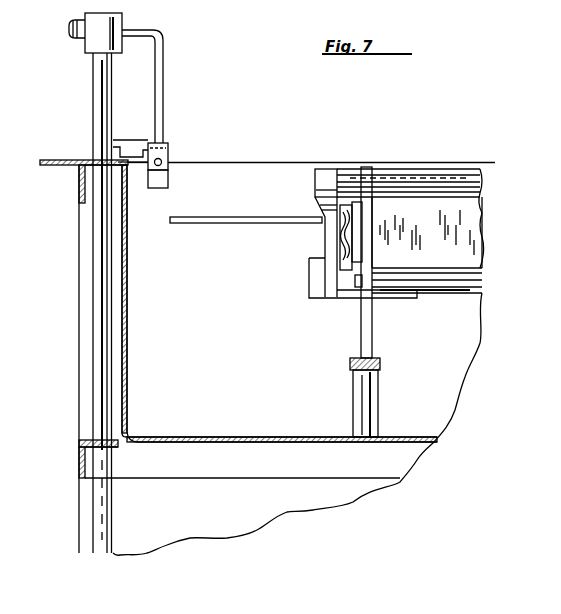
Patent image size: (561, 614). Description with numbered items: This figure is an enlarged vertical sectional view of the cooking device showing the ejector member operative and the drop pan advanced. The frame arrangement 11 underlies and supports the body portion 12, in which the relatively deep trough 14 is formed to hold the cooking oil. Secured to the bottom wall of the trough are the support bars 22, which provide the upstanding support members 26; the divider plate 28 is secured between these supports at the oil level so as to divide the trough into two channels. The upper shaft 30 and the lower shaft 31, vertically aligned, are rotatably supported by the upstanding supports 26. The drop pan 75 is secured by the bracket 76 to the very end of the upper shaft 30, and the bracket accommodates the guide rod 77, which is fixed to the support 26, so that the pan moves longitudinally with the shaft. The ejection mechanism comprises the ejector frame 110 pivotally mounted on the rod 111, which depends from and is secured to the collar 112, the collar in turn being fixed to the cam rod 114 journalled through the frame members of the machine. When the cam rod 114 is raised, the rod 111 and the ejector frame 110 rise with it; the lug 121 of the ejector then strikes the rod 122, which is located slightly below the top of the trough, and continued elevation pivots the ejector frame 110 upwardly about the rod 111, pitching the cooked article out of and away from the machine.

The frame arrangement 11 is at (80, 467).
The body portion 12 is at (122, 368).
The trough 14 is at (187, 443).
The support bars 22 is at (383, 368).
The upstanding support members 26 is at (372, 170).
The divider plate 28 is at (435, 227).
The upper shaft 30 is at (430, 183).
The lower shaft 31 is at (470, 295).
The drop pan 75 is at (313, 280).
The bracket 76 is at (330, 175).
The guide rod 77 is at (188, 224).
The ejector frame 110 is at (168, 149).
The rod 111 is at (162, 158).
The collar 112 is at (88, 48).
The cam rod 114 is at (97, 97).
The lug 121 is at (168, 182).
The rod 122 is at (118, 157).